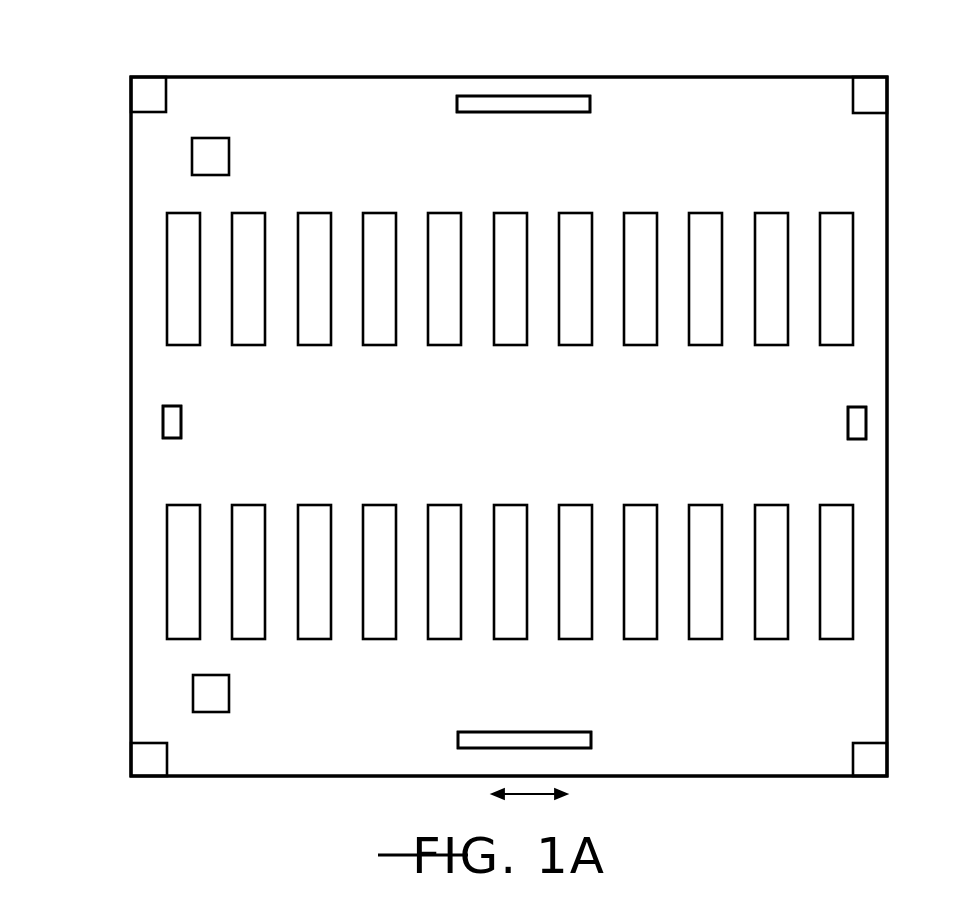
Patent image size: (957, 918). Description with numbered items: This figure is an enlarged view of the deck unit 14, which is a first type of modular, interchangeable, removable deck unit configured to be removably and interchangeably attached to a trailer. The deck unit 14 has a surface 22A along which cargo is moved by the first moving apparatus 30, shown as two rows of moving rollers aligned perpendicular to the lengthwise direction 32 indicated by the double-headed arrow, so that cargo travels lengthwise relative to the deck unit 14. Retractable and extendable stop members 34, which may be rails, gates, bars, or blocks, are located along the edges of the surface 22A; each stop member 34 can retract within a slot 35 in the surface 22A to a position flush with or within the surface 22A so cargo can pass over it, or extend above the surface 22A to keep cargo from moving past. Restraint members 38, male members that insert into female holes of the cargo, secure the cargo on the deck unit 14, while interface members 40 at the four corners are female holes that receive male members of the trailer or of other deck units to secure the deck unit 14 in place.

The deck unit 14 is at (640, 102).
The surface 22A is at (430, 700).
The first moving apparatus 30 is at (375, 639).
The lengthwise direction 32 is at (523, 794).
The stop member 34 is at (497, 96).
The slot 35 is at (520, 112).
The restraint member 38 is at (202, 138).
The interface member 40 is at (130, 101).